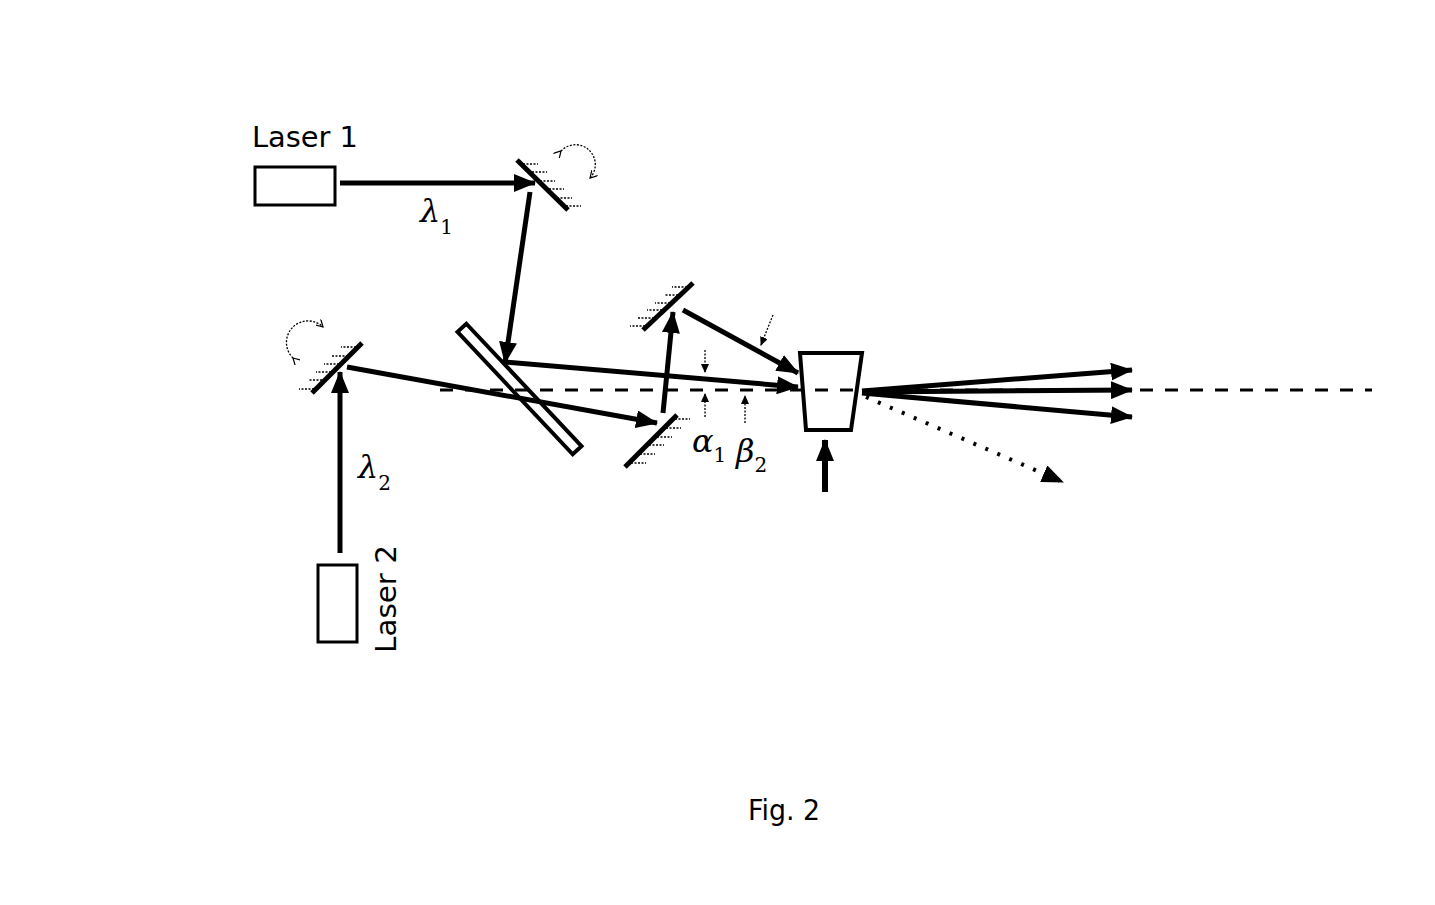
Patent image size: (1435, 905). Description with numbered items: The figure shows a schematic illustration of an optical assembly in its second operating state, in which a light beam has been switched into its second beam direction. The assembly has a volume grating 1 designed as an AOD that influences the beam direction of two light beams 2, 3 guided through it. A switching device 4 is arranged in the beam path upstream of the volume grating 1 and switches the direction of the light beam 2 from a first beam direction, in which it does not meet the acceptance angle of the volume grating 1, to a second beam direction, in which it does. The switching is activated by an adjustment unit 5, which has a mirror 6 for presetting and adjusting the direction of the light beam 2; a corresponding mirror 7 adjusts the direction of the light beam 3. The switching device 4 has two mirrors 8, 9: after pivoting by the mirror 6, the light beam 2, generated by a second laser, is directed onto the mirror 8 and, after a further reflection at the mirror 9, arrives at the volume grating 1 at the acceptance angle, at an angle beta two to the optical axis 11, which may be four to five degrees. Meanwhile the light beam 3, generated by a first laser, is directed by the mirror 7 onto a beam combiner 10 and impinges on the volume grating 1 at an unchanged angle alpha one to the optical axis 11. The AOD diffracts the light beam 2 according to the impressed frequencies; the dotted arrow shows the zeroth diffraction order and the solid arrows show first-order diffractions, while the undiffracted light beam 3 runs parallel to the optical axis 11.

The volume grating 1 is at (827, 352).
The light beam 2 is at (400, 380).
The light beam 3 is at (553, 360).
The switching device 4 is at (740, 195).
The adjustment unit 5 is at (293, 435).
The mirror 6 is at (323, 380).
The mirror 7 is at (525, 160).
The mirror 8 is at (635, 468).
The mirror 9 is at (675, 300).
The beam combiner 10 is at (552, 437).
The optical axis 11 is at (1233, 387).